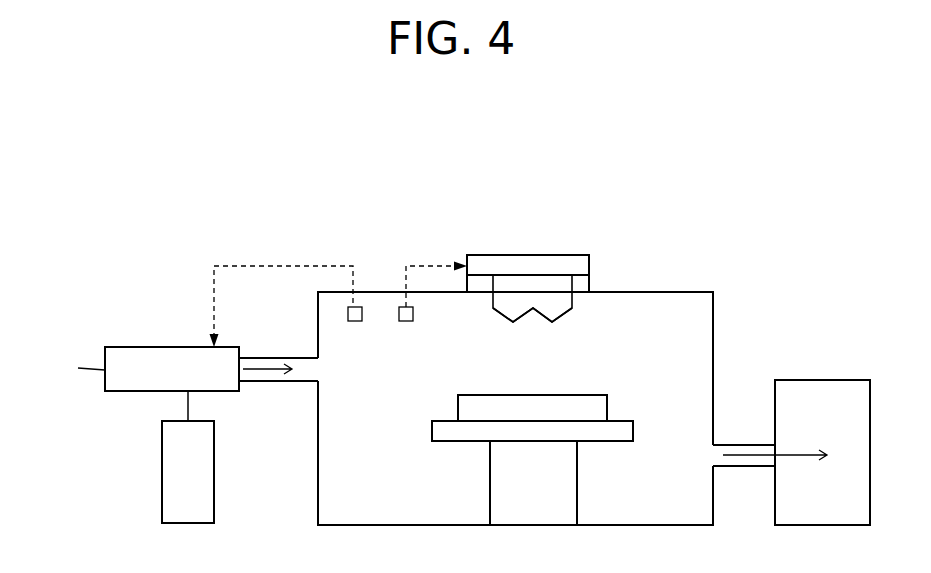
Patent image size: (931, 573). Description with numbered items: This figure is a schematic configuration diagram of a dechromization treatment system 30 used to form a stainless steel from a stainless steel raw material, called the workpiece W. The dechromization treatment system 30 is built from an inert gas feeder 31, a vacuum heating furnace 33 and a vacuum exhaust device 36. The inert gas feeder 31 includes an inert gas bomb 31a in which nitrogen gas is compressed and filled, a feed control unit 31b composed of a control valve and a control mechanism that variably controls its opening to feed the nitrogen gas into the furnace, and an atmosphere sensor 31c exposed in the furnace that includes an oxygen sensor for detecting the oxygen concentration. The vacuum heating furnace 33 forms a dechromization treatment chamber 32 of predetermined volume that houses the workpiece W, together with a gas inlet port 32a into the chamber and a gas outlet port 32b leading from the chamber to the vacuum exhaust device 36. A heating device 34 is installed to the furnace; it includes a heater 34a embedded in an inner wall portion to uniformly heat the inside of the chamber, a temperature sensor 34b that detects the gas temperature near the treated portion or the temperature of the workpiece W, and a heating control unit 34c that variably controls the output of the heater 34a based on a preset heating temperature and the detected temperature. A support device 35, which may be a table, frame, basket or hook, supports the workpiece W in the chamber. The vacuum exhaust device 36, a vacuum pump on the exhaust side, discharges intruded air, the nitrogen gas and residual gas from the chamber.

The dechromization treatment system 30 is at (566, 175).
The inert gas feeder 31 is at (166, 337).
The inert gas bomb 31a is at (214, 462).
The feed control unit 31b is at (105, 370).
The atmosphere sensor 31c is at (355, 321).
The dechromization treatment chamber 32 is at (661, 384).
The gas inlet port 32a is at (271, 357).
The gas outlet port 32b is at (740, 445).
The vacuum heating furnace 33 is at (715, 283).
The heating device 34 is at (492, 240).
The heater 34a is at (562, 321).
The temperature sensor 34b is at (406, 321).
The heating control unit 34c is at (531, 255).
The support device 35 is at (432, 430).
The vacuum exhaust device 36 is at (812, 380).
The workpiece W is at (503, 394).